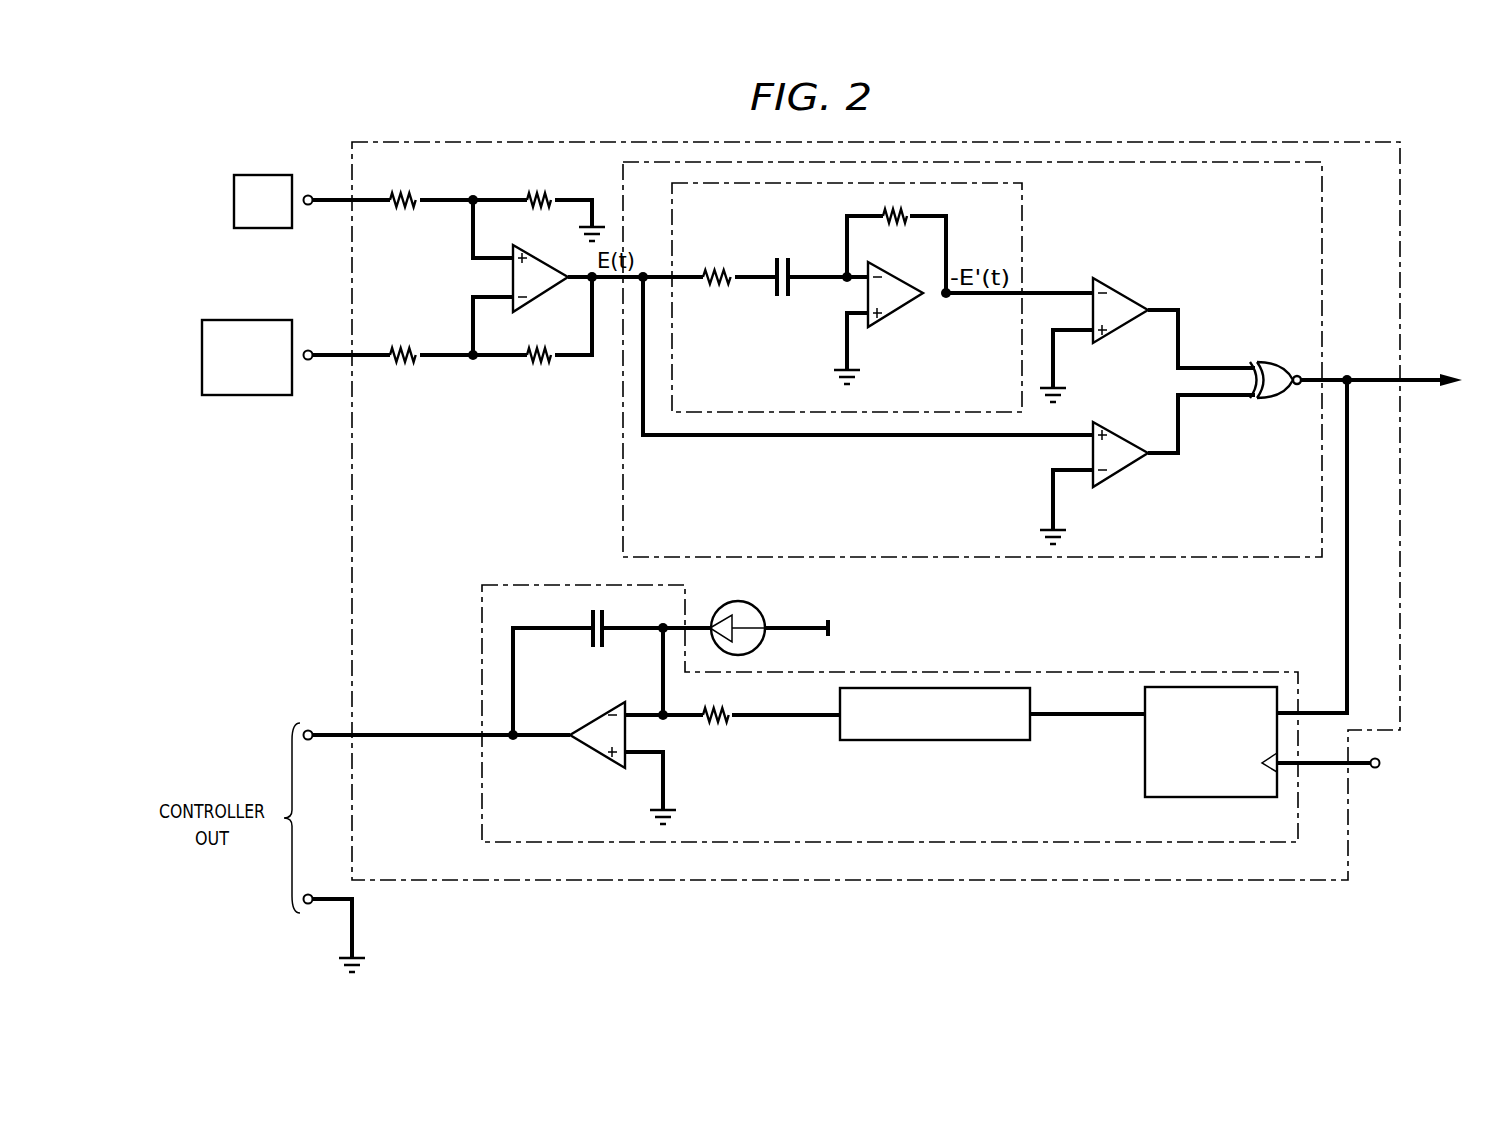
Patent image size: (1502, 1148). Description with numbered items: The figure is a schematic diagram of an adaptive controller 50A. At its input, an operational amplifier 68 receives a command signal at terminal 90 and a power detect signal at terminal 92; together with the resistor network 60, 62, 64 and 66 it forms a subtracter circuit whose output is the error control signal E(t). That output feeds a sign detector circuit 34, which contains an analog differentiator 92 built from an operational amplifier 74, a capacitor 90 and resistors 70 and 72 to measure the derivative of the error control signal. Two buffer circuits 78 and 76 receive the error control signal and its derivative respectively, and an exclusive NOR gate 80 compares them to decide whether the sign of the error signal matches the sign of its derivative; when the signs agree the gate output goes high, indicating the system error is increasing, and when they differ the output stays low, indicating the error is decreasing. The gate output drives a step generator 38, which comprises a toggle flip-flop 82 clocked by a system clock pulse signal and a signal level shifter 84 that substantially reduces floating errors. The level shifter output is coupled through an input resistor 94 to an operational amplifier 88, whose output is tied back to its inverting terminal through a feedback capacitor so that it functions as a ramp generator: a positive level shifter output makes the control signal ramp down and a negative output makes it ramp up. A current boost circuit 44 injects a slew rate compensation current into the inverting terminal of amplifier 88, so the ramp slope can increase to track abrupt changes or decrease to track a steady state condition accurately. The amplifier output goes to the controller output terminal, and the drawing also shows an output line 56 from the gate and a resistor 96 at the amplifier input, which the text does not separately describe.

The command signal terminal 90 is at (234, 200).
The power detect terminal 92 is at (228, 320).
The resistor 60 is at (409, 212).
The resistor 62 is at (528, 194).
The resistor 64 is at (404, 347).
The resistor 66 is at (536, 363).
The operational amplifier 68 is at (546, 293).
The resistor 70 is at (716, 270).
The resistor 72 is at (884, 211).
The operational amplifier 74 is at (906, 307).
The buffer circuit 76 is at (1121, 292).
The buffer circuit 78 is at (1120, 432).
The exclusive NOR gate 80 is at (1265, 362).
The output signal line 56 is at (1422, 378).
The adaptive controller 50A is at (1400, 247).
The sign detector circuit 34 is at (1240, 557).
The current boost circuit 44 is at (766, 613).
The input resistor 94 is at (593, 642).
The operational amplifier 88 is at (598, 751).
The input resistor 96 is at (722, 721).
The signal level shifter 84 is at (975, 740).
The toggle flip-flop 82 is at (1145, 758).
The step generator 38 is at (1298, 818).